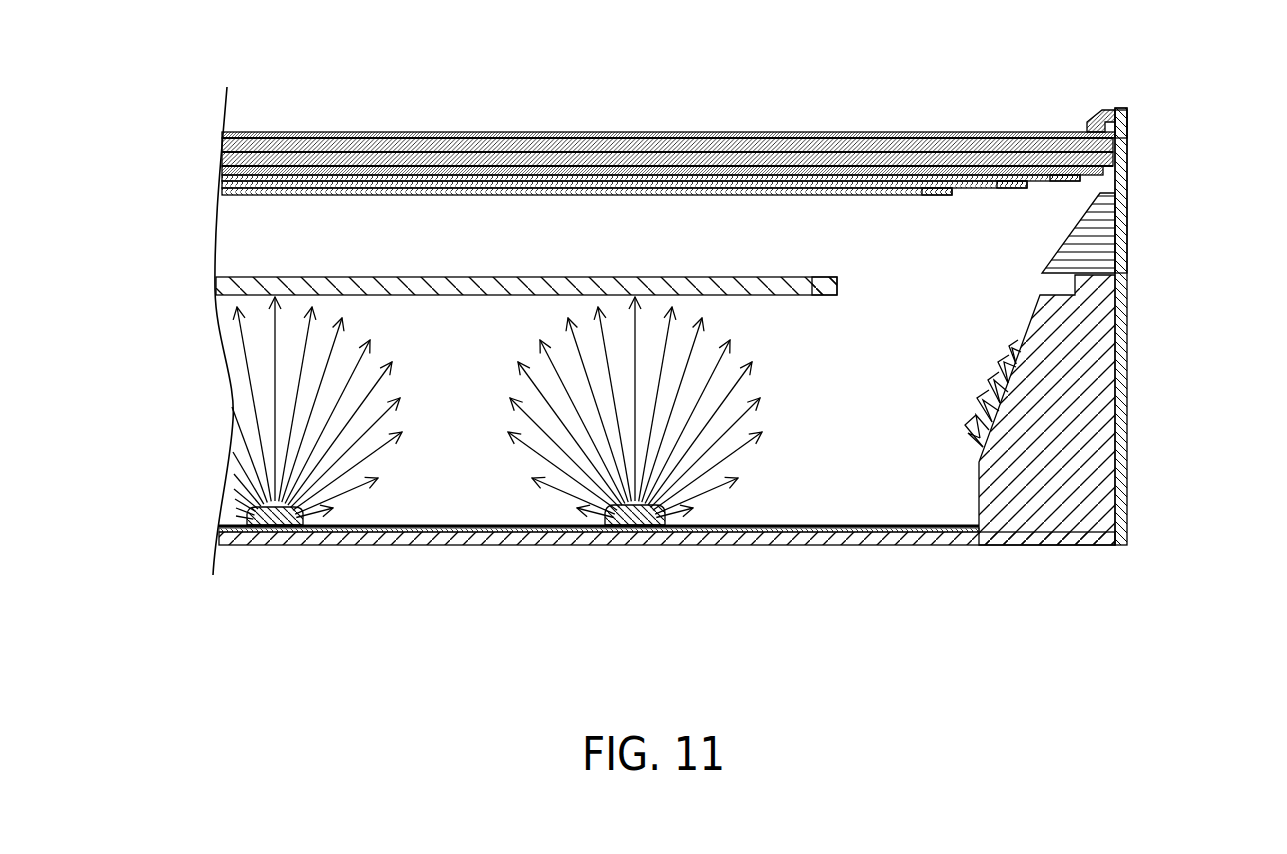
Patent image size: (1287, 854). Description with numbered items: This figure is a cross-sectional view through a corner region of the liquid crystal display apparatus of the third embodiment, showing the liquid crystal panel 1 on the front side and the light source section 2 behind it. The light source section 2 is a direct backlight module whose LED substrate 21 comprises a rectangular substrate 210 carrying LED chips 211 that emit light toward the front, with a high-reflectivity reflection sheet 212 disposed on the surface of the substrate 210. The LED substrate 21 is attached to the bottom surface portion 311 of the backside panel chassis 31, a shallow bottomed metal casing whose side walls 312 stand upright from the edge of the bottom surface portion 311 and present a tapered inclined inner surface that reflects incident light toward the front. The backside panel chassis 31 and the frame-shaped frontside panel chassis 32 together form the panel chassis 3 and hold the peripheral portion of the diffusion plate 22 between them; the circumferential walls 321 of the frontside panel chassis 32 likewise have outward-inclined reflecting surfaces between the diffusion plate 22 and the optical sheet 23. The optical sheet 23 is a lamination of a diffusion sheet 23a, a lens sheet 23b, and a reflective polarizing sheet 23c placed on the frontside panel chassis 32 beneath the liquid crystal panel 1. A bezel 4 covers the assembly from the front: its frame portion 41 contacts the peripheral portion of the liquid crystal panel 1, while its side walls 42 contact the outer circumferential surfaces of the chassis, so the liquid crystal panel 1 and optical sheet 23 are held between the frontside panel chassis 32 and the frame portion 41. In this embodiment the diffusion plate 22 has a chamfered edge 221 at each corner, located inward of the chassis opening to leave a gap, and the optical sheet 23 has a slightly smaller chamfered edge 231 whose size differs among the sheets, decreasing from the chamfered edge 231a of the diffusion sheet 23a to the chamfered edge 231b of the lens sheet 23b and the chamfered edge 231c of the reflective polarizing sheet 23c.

The liquid crystal panel 1 is at (407, 132).
The light source section 2 is at (599, 470).
The LED substrate 21 is at (599, 454).
The substrate 210 is at (752, 532).
The LED chip 211 is at (292, 528).
The reflection sheet 212 is at (477, 523).
The diffusion plate 22 is at (548, 288).
The chamfered edge 221 is at (838, 287).
The optical sheet 23 is at (662, 141).
The diffusion sheet 23a is at (612, 231).
The lens sheet 23b is at (520, 185).
The reflective polarizing sheet 23c is at (577, 178).
The chamfered edge 231 is at (993, 100).
The chamfered edge 231a is at (949, 137).
The chamfered edge 231b is at (1027, 180).
The chamfered edge 231c is at (1087, 167).
The panel chassis 3 is at (745, 363).
The backside panel chassis 31 is at (1114, 330).
The bottom surface portion 311 is at (847, 537).
The side wall 312 is at (1053, 495).
The frontside panel chassis 32 is at (1098, 190).
The circumferential wall 321 is at (1075, 245).
The bezel 4 is at (1130, 73).
The frame portion 41 is at (1102, 110).
The side wall 42 is at (1157, 137).